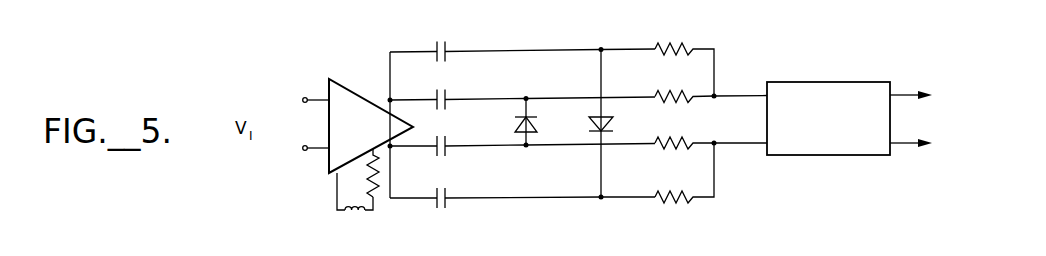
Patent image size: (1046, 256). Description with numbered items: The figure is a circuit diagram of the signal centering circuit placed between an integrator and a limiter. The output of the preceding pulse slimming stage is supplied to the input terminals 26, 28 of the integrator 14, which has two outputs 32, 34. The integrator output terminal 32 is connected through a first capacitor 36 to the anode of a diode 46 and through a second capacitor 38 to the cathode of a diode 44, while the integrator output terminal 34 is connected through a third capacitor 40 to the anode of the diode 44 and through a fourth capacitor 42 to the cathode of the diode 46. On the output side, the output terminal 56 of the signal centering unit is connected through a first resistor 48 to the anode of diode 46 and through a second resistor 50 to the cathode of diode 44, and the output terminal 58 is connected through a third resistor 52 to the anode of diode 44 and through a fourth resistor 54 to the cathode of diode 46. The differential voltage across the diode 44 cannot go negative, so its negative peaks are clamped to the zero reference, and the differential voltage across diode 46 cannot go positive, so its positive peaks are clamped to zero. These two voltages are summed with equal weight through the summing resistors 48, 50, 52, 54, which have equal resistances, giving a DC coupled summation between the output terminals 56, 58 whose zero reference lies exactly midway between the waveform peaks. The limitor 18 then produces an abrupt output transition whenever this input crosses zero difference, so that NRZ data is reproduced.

The integrator 14 is at (324, 79).
The limitor 18 is at (865, 82).
The input terminal 26 is at (302, 100).
The input terminal 28 is at (302, 148).
The integrator output terminal 32 is at (389, 97).
The integrator output terminal 34 is at (391, 148).
The first capacitor 36 is at (448, 51).
The second capacitor 38 is at (448, 99).
The third capacitor 40 is at (448, 146).
The fourth capacitor 42 is at (448, 196).
The diode 44 is at (516, 117).
The diode 46 is at (614, 127).
The first resistor 48 is at (657, 43).
The second resistor 50 is at (657, 88).
The third resistor 52 is at (657, 136).
The fourth resistor 54 is at (657, 190).
The output terminal 56 is at (715, 94).
The output terminal 58 is at (716, 145).